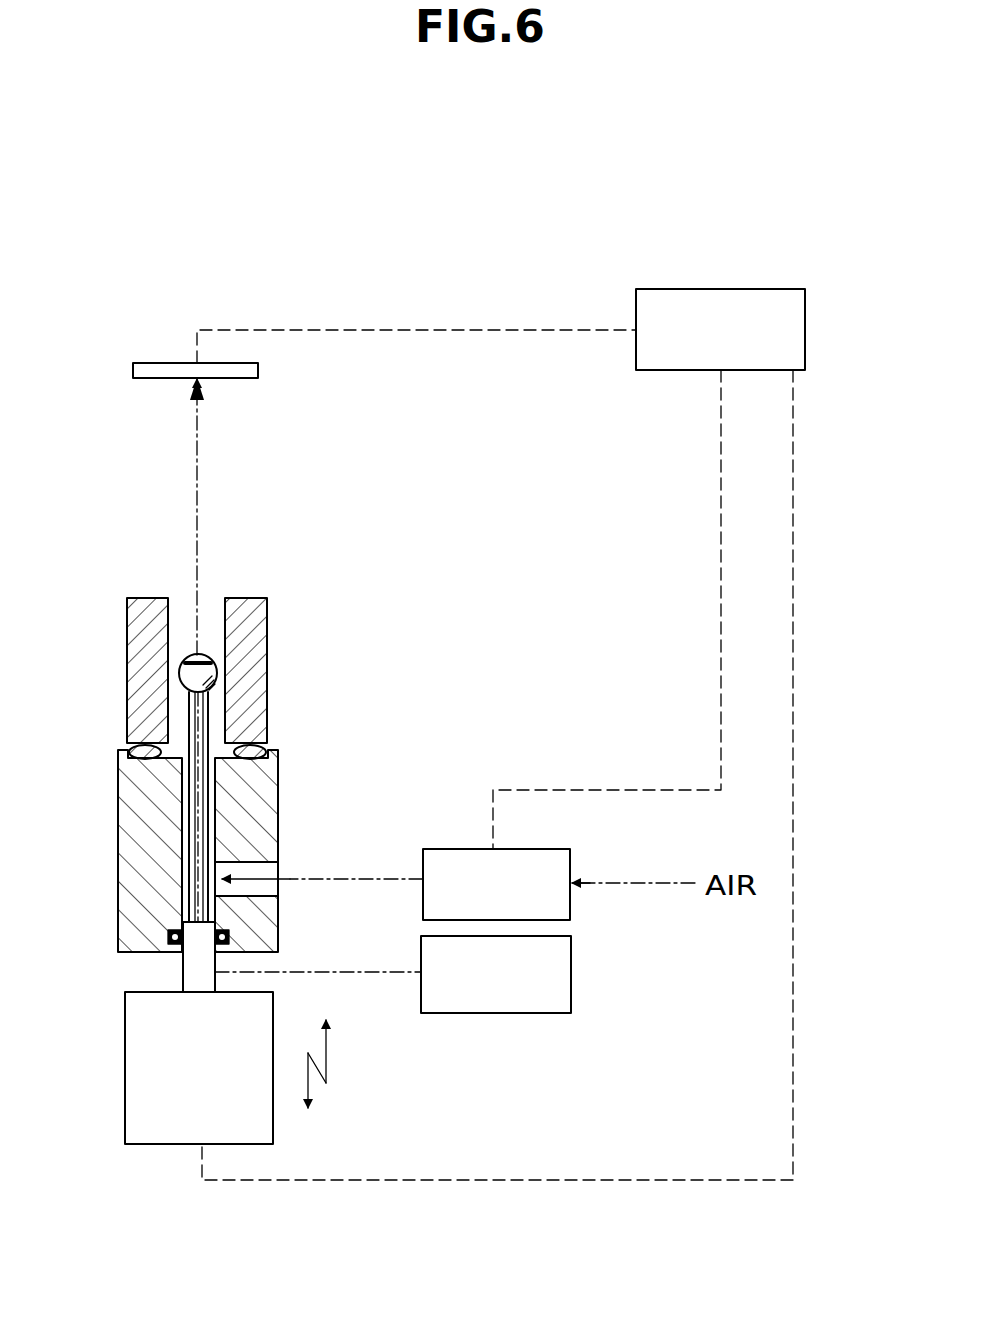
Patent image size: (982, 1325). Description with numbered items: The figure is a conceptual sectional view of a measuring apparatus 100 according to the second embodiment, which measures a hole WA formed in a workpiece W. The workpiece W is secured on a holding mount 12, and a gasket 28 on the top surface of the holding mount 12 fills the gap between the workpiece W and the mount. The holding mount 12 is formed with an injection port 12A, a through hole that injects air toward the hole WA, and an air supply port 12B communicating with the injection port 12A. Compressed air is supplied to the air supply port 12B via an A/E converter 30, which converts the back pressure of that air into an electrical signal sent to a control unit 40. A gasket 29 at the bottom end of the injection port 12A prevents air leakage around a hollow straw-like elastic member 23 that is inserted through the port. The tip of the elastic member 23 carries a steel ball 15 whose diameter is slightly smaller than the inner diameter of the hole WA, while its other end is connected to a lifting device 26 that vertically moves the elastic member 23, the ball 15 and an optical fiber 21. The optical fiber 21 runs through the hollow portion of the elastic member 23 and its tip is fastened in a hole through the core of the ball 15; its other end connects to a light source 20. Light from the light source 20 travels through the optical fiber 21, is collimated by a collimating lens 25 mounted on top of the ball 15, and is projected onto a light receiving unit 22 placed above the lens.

The measuring apparatus 100 is at (543, 222).
The light receiving unit 22 is at (140, 368).
The control unit 40 is at (775, 289).
The workpiece W is at (137, 645).
The hole WA is at (215, 598).
The ball 15 is at (180, 674).
The collimating lens 25 is at (205, 656).
The optical fiber 21 is at (208, 680).
The gasket 28 is at (128, 750).
The holding mount 12 is at (130, 820).
The injection port 12A is at (213, 750).
The elastic member 23 is at (212, 815).
The air supply port 12B is at (290, 878).
The gasket 29 is at (165, 940).
The lifting device 26 is at (138, 1122).
The A/E converter 30 is at (447, 849).
The light source 20 is at (545, 1013).